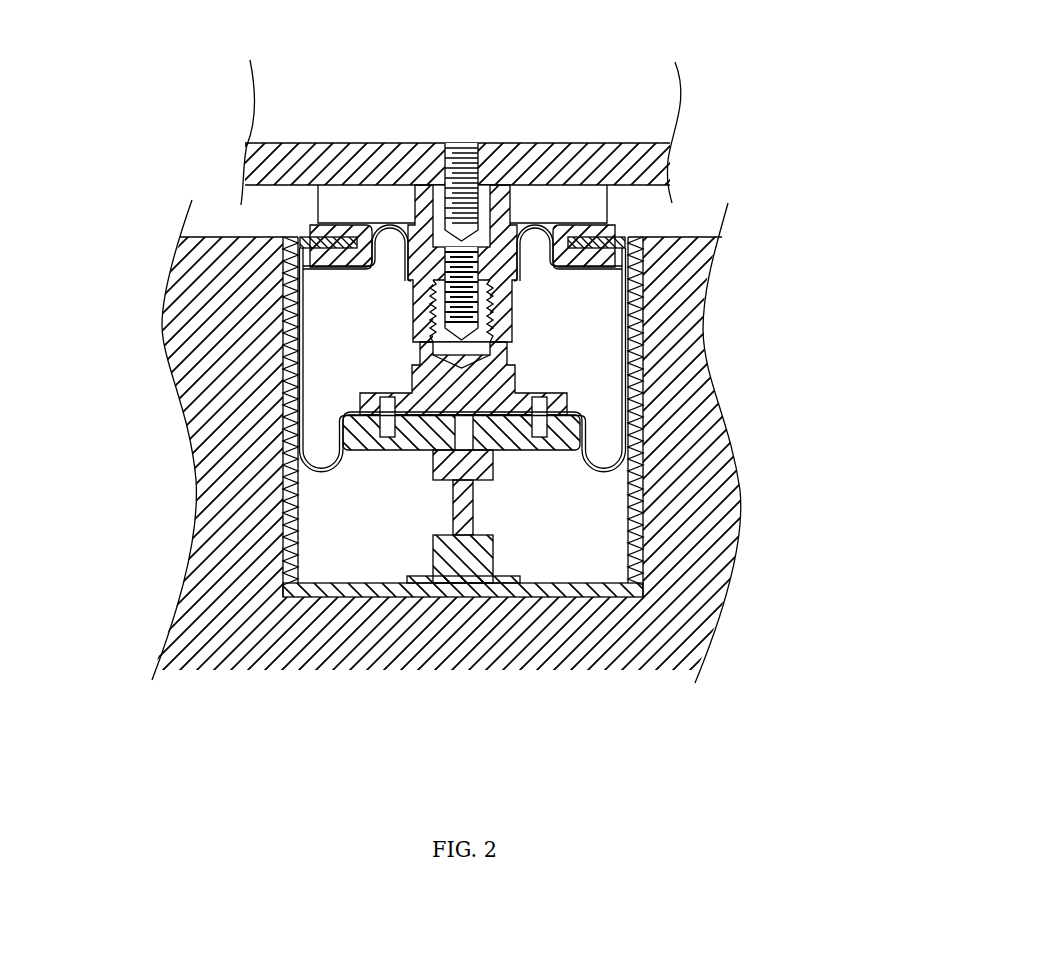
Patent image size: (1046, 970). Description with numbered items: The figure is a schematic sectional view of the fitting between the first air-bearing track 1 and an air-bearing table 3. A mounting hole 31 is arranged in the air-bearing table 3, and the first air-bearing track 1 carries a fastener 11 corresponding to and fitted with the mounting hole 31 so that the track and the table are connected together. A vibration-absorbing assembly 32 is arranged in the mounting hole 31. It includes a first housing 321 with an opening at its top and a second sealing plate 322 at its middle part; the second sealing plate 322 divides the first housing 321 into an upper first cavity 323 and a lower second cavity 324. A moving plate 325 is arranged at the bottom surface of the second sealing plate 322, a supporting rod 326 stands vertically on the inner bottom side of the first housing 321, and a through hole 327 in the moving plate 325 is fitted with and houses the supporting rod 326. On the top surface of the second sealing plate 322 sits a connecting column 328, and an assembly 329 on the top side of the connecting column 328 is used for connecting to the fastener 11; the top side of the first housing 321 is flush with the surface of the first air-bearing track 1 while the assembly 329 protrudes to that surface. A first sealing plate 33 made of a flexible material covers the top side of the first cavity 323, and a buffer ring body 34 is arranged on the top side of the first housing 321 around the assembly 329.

The first air-bearing track 1 is at (300, 160).
The fastener 11 is at (460, 172).
The air-bearing table 3 is at (712, 475).
The mounting hole 31 is at (330, 338).
The vibration-absorbing assembly 32 is at (642, 220).
The first sealing plate 33 is at (593, 267).
The buffer ring body 34 is at (570, 205).
The first housing 321 is at (300, 388).
The second sealing plate 322 is at (605, 470).
The first cavity 323 is at (296, 302).
The second cavity 324 is at (310, 550).
The moving plate 325 is at (340, 432).
The supporting rod 326 is at (467, 513).
The through hole 327 is at (450, 452).
The connecting column 328 is at (500, 387).
The assembly 329 is at (415, 200).